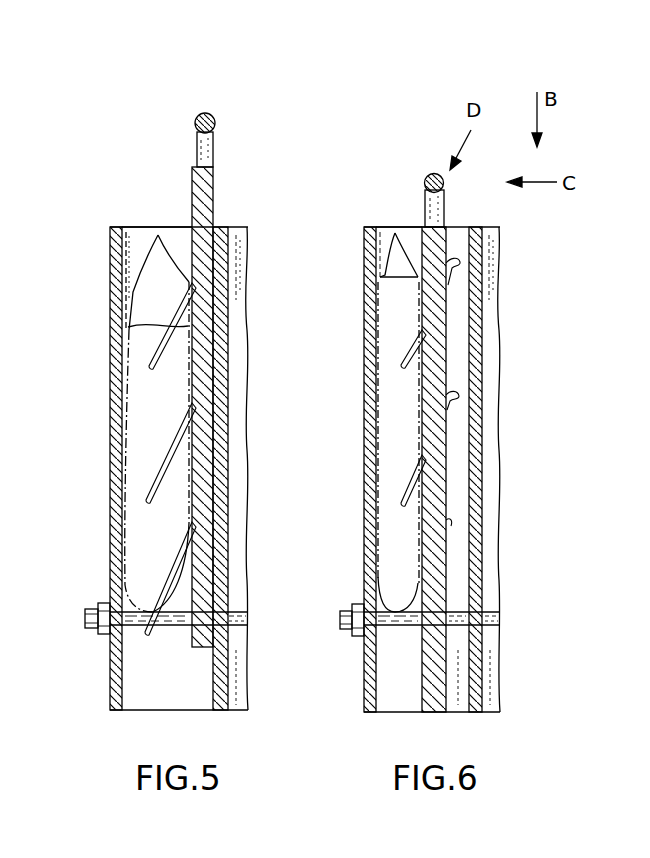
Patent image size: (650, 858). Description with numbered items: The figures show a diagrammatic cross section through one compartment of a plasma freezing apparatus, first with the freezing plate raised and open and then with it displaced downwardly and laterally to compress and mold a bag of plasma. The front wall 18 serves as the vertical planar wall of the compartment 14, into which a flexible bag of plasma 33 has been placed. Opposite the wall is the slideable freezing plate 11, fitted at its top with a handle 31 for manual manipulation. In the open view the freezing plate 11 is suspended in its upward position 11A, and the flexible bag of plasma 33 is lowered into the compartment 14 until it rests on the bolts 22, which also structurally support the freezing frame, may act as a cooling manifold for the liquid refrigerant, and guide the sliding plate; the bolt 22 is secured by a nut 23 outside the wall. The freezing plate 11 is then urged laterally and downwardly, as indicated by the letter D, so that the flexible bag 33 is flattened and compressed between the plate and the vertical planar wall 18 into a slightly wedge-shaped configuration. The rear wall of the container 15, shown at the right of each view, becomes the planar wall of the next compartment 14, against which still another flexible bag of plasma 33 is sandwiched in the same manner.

In FIG. 6, the slideable freezing plate 11 is at (447, 305).
In FIG. 5, the upward position of slideable freezing plate 11A is at (214, 197).
In FIG. 5, the compartment 14 is at (142, 220).
In FIG. 6, the compartment 14 is at (399, 213).
In FIG. 5, the rear wall of the container 15 is at (228, 333).
In FIG. 6, the rear wall of the container 15 is at (482, 348).
In FIG. 5, the front wall 18 is at (110, 273).
In FIG. 6, the front wall 18 is at (364, 272).
In FIG. 5, the bolt 22 is at (85, 618).
In FIG. 6, the bolt 22 is at (340, 625).
In FIG. 5, the nut 23 is at (98, 632).
In FIG. 6, the nut 23 is at (352, 604).
In FIG. 5, the handle 31 is at (209, 114).
In FIG. 6, the handle 31 is at (430, 175).
In FIG. 5, the flexible bag of plasma 33 is at (167, 418).
In FIG. 6, the flexible bag of plasma 33 is at (411, 418).